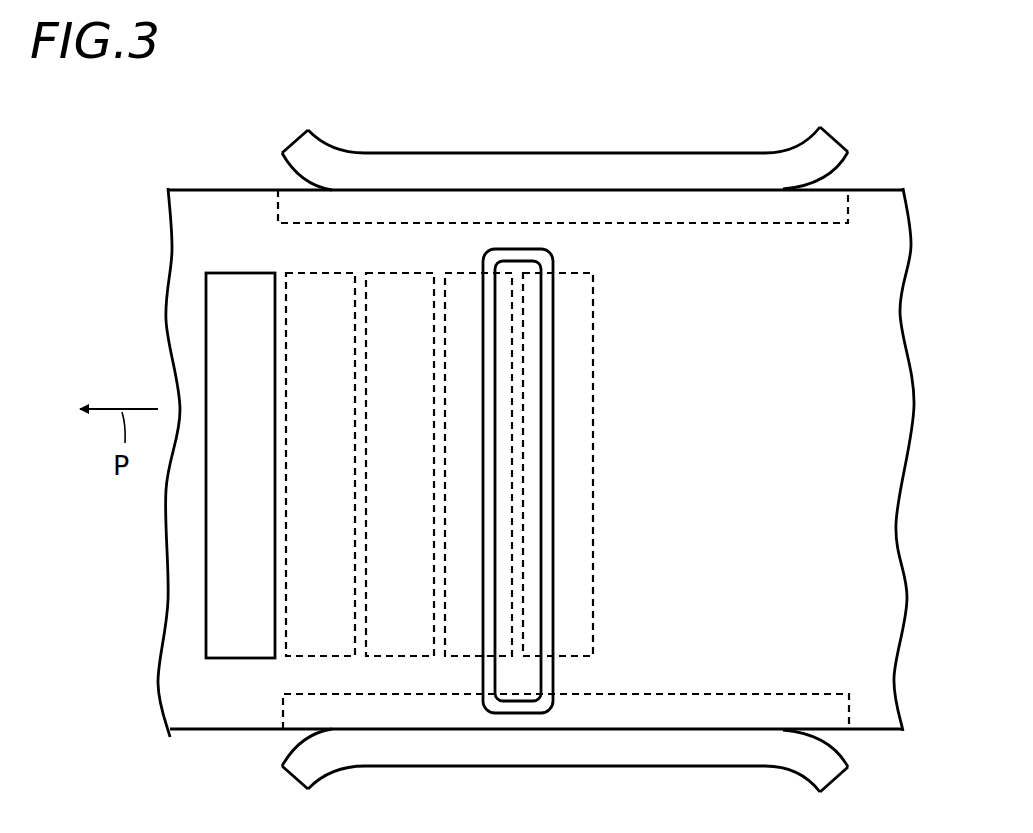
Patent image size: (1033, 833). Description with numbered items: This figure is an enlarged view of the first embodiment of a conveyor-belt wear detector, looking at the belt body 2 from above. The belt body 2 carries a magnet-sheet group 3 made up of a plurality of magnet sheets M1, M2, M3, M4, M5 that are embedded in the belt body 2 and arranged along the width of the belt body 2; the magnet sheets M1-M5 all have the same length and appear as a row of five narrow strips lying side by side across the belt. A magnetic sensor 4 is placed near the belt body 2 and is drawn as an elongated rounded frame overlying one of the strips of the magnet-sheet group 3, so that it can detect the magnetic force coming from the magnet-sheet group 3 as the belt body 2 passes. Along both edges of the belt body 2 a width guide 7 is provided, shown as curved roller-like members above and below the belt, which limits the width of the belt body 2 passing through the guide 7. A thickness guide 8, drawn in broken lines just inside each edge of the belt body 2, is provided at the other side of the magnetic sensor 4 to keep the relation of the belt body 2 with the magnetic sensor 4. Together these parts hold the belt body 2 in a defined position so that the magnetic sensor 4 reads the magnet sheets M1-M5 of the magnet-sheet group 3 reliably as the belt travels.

The belt body 2 is at (212, 186).
The magnet-sheet group 3 is at (455, 444).
The magnetic sensor 4 is at (520, 715).
The width guide 7 is at (592, 153).
The thickness guide 8 is at (853, 207).
The magnet sheet M1 is at (258, 273).
The magnet sheet M2 is at (335, 273).
The magnet sheet M3 is at (407, 273).
The magnet sheet M4 is at (475, 273).
The magnet sheet M5 is at (573, 273).